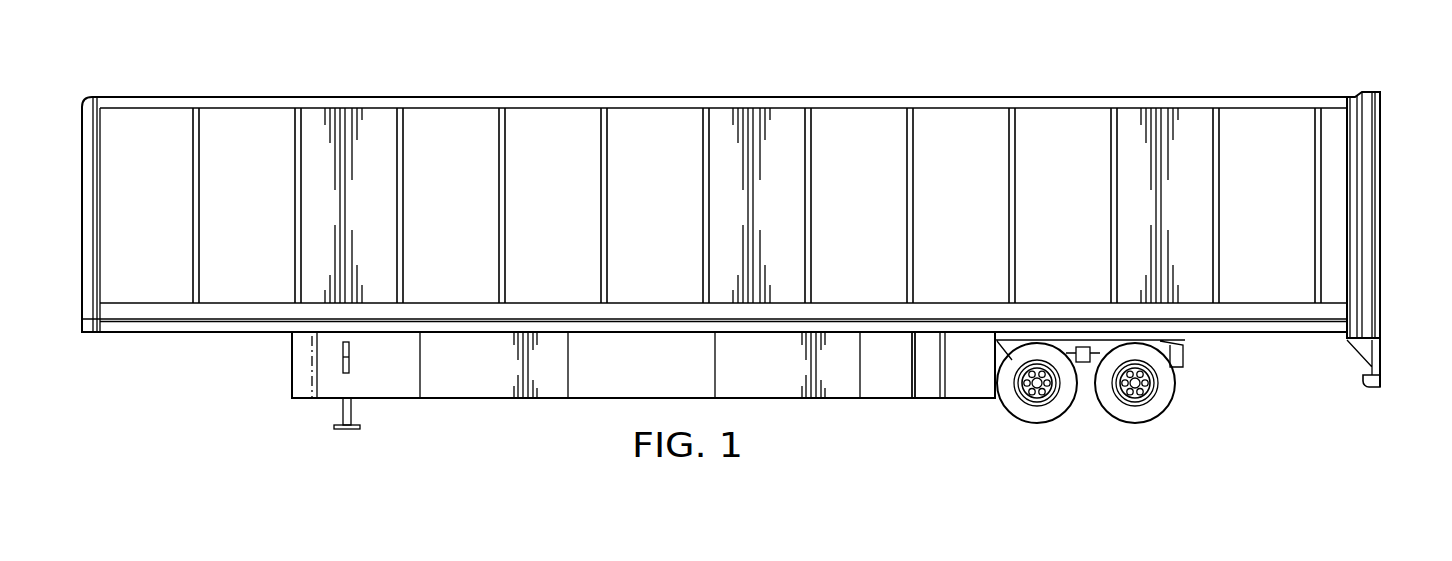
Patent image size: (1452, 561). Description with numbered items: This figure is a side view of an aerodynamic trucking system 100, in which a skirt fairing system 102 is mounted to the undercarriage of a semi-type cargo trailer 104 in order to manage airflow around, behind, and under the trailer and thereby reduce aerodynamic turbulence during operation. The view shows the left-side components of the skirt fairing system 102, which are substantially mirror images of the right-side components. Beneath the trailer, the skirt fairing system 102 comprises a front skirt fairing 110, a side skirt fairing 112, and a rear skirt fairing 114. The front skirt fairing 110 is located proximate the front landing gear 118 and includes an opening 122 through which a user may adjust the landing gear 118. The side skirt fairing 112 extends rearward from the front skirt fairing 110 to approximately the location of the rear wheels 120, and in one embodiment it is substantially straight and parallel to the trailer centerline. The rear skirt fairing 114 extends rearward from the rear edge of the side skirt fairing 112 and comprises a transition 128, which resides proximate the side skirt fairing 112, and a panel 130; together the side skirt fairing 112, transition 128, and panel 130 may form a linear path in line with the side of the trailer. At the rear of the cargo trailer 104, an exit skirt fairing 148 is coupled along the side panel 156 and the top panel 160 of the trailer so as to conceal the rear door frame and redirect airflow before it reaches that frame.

The aerodynamic trucking system 100 is at (493, 448).
The skirt fairing system 102 is at (800, 422).
The cargo trailer 104 is at (541, 92).
The front skirt fairing 110 is at (301, 418).
The side skirt fairing 112 is at (548, 417).
The rear skirt fairing 114 is at (955, 427).
The landing gear 118 is at (342, 408).
The wheels 120 is at (1141, 436).
The opening 122 is at (350, 357).
The transition 128 is at (930, 388).
The panel 130 is at (982, 388).
The exit skirt fairing 148 is at (1380, 140).
The side panel 156 is at (1268, 137).
The top panel 160 is at (1053, 98).